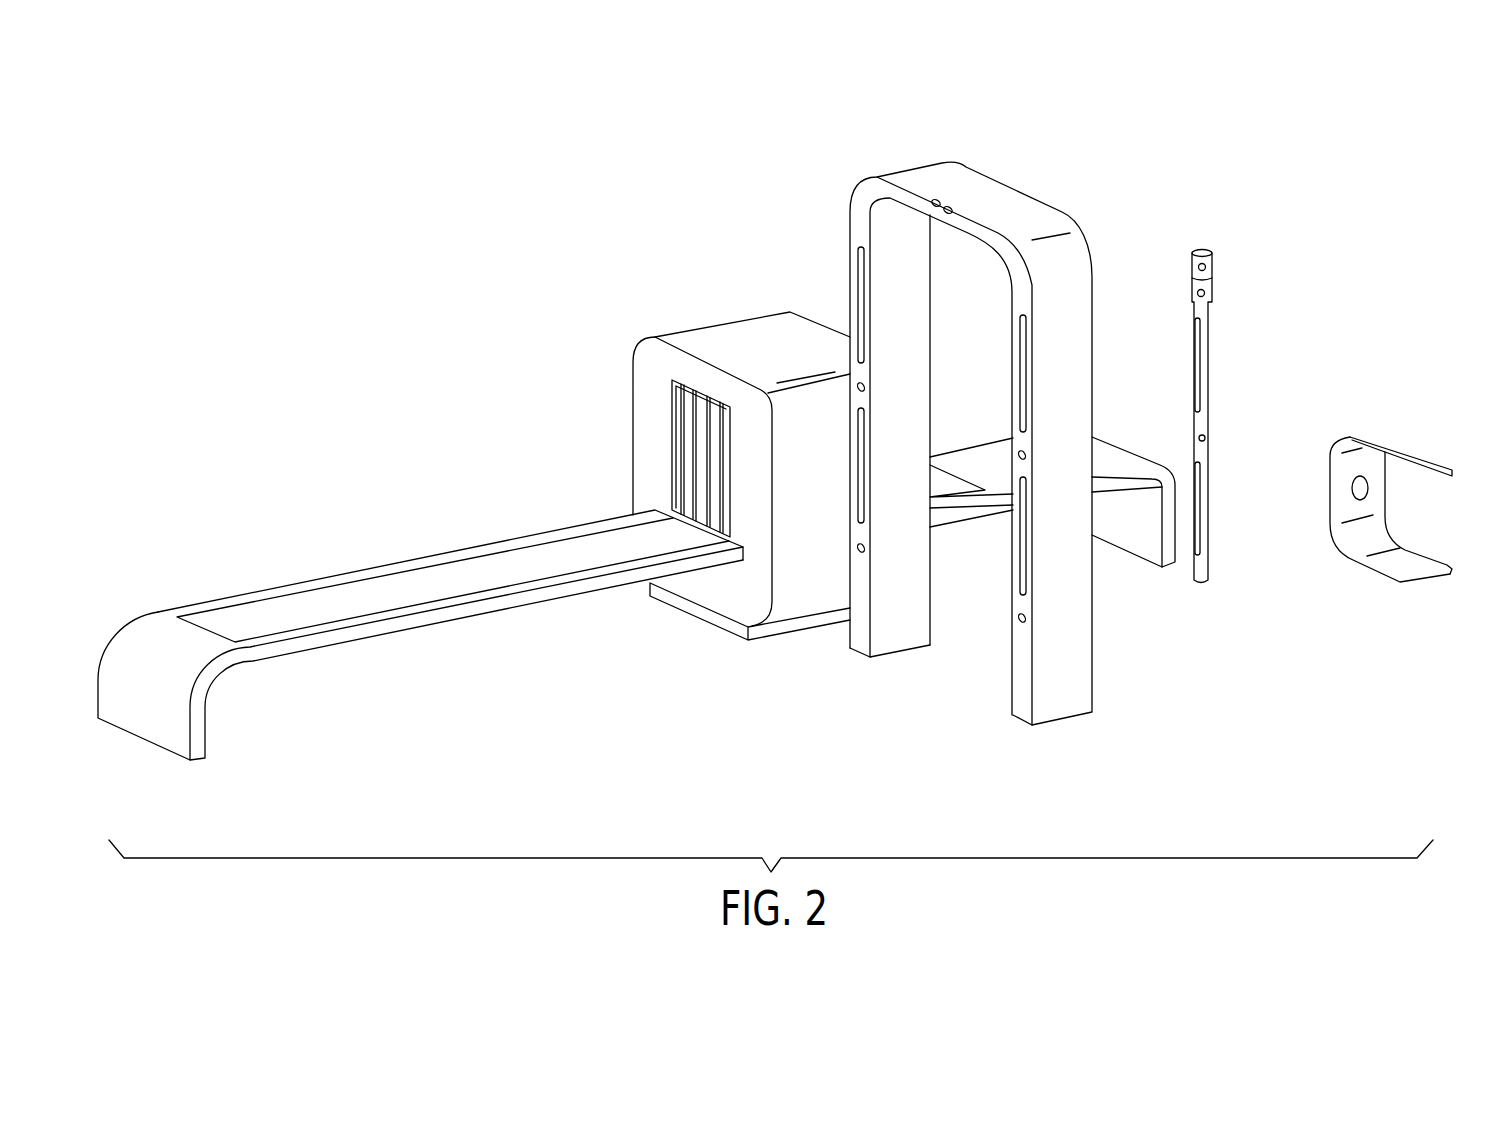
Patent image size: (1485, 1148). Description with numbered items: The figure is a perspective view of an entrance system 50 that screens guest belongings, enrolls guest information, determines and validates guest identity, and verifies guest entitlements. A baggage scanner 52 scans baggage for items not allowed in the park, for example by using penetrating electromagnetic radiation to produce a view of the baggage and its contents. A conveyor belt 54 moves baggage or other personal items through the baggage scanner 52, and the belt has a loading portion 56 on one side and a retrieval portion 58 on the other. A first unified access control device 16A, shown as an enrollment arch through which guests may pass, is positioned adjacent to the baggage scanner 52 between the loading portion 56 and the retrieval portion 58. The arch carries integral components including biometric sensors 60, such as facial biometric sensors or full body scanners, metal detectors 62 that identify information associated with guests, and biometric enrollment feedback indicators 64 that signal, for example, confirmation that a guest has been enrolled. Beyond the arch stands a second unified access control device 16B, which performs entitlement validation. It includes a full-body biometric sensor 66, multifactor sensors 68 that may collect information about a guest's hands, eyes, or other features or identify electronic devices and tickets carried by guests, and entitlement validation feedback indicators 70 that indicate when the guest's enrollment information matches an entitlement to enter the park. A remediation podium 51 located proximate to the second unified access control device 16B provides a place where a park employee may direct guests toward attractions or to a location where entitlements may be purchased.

The entrance system 50 is at (1288, 112).
The remediation podium 51 is at (1413, 426).
The baggage scanner 52 is at (604, 368).
The conveyor belt 54 is at (582, 528).
The loading portion 56 is at (240, 627).
The retrieval portion 58 is at (963, 472).
The biometric sensors 60 is at (940, 200).
The metal detectors 62 is at (890, 272).
The biometric enrollment feedback indicators 64 is at (866, 306).
The full-body biometric sensor 66 is at (1193, 264).
The multifactor sensors 68 is at (1196, 296).
The entitlement validation feedback indicators 70 is at (1208, 363).
The first unified access control device 16A is at (1045, 185).
The second unified access control device 16B is at (1228, 254).